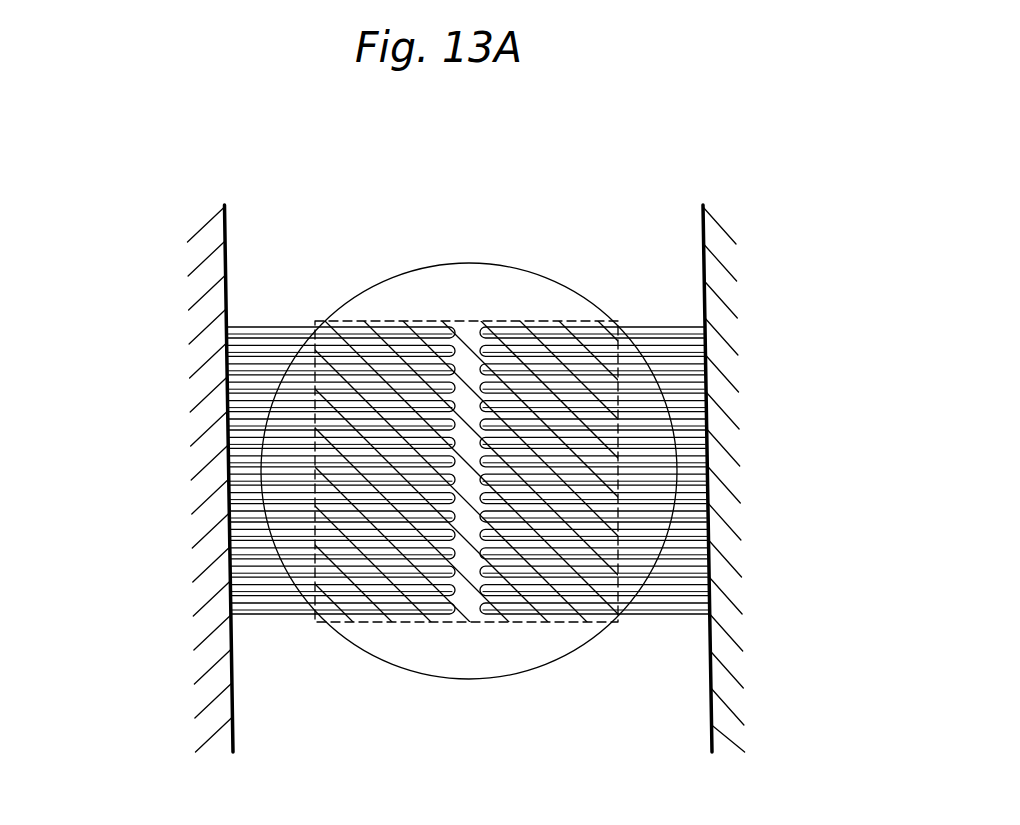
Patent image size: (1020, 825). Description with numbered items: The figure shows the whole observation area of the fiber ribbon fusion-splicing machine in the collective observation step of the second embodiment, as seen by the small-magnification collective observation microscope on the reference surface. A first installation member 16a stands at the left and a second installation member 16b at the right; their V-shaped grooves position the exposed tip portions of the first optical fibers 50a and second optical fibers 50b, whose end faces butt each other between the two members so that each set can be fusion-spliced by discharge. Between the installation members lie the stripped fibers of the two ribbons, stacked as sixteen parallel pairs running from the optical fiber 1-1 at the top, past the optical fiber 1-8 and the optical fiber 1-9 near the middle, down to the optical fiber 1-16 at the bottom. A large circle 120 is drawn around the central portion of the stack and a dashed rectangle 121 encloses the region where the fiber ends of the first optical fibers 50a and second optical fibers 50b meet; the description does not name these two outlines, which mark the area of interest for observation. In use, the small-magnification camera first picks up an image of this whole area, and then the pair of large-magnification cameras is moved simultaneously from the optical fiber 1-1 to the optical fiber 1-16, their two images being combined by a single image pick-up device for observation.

The first installation member 16a is at (195, 380).
The second installation member 16b is at (728, 442).
The optical fiber 1-1 is at (267, 330).
The optical fiber 1-8 is at (229, 462).
The optical fiber 1-9 is at (229, 483).
The optical fiber 1-16 is at (230, 612).
The processing region (enlarged area) 120 is at (470, 263).
The heated region boundary 121 is at (460, 321).
The first optical fibers 50a is at (289, 632).
The second optical fibers 50b is at (650, 632).